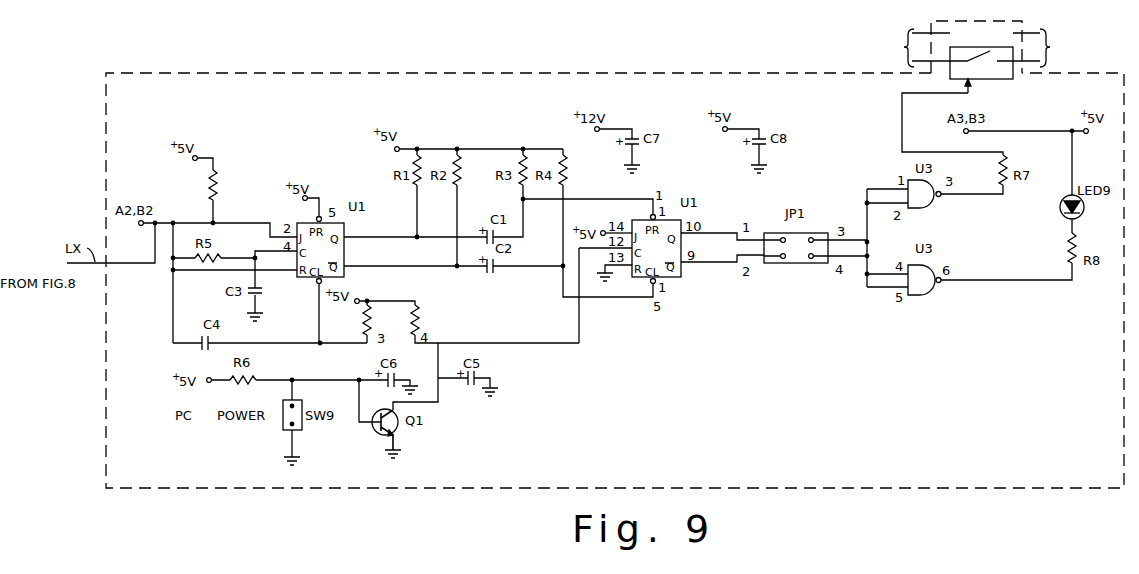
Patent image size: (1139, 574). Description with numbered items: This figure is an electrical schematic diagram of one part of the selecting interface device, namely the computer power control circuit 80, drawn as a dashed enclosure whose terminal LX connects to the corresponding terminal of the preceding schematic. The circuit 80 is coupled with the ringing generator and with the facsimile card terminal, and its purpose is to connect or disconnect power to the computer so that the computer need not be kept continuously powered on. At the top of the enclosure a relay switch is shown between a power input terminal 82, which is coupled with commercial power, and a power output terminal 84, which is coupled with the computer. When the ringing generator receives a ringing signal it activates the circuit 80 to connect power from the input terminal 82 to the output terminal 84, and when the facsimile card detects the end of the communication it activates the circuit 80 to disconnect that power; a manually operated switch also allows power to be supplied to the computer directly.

The computer power control circuit 80 is at (593, 73).
The power input terminal 82 is at (905, 50).
The power output terminal 84 is at (1048, 50).